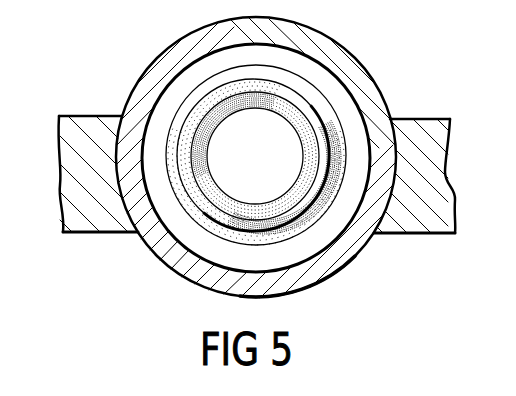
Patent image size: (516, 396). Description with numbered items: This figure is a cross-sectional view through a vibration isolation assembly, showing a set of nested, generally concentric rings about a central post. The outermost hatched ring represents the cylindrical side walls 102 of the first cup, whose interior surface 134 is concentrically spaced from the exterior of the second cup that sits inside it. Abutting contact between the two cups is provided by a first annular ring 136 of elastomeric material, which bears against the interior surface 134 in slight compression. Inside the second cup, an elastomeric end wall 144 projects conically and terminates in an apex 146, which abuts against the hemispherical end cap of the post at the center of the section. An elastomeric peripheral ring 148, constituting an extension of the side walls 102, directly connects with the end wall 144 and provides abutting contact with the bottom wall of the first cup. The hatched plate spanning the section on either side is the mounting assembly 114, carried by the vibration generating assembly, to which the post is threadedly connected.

The cylindrical side walls 102 is at (371, 80).
The mounting assembly 114 is at (443, 129).
The interior surface 134 is at (327, 242).
The first annular ring 136 is at (177, 230).
The elastomeric end wall 144 is at (226, 132).
The apex 146 is at (255, 155).
The elastomeric peripheral ring 148 is at (192, 125).